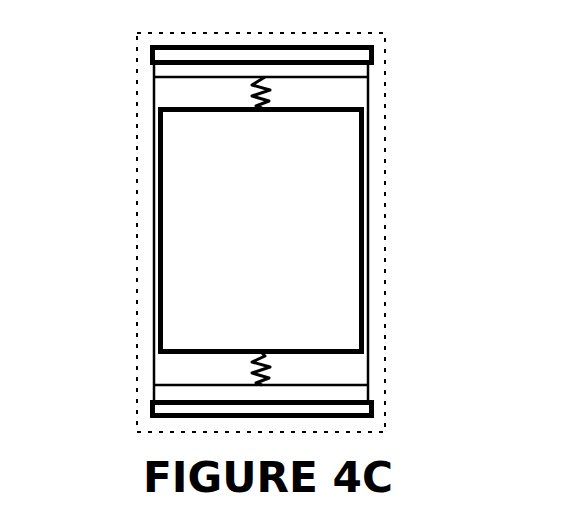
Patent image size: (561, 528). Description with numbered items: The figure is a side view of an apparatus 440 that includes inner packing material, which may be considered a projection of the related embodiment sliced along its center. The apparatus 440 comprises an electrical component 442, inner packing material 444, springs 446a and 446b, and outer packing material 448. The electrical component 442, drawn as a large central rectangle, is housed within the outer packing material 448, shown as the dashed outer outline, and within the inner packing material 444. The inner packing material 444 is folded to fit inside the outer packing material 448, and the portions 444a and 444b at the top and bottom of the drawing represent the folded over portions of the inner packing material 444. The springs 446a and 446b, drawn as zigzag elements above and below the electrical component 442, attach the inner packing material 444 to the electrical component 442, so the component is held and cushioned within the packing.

The apparatus 440 is at (246, 252).
The electrical component 442 is at (364, 227).
The inner packing material 444 is at (369, 177).
The folded over portion of the inner packing material 444a is at (372, 65).
The folded over portion of the inner packing material 444b is at (352, 412).
The spring 446a is at (258, 110).
The spring 446b is at (257, 353).
The outer packing material 448 is at (137, 147).